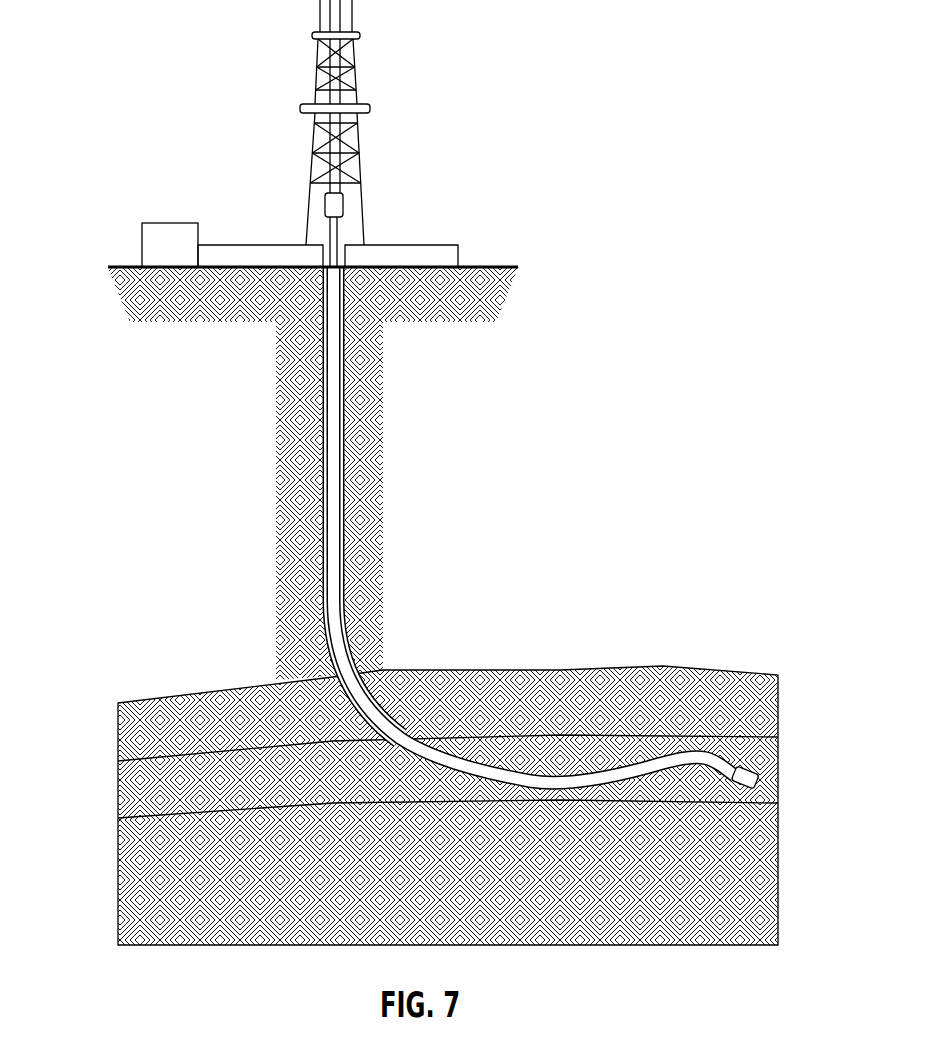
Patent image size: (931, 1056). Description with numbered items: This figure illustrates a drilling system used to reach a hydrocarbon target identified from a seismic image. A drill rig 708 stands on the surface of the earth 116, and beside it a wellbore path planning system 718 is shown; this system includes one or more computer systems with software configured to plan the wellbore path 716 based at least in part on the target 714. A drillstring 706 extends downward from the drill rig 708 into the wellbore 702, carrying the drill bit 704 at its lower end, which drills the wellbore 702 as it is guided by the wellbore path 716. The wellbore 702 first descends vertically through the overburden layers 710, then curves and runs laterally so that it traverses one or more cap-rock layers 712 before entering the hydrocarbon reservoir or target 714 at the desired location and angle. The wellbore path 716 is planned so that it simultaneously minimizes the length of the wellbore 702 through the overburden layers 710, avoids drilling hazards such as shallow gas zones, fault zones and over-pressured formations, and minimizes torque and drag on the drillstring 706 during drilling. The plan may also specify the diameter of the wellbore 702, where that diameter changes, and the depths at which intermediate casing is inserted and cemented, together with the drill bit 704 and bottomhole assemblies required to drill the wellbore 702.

The surface of the earth 116 is at (485, 267).
The wellbore 702 is at (322, 489).
The drill bit 704 is at (767, 770).
The drillstring 706 is at (338, 236).
The drill rig 708 is at (359, 141).
The overburden layers 710 is at (381, 372).
The cap-rock layer 712 is at (118, 712).
The target 714 is at (118, 790).
The wellbore path 716 is at (762, 780).
The wellbore path planning system 718 is at (190, 223).